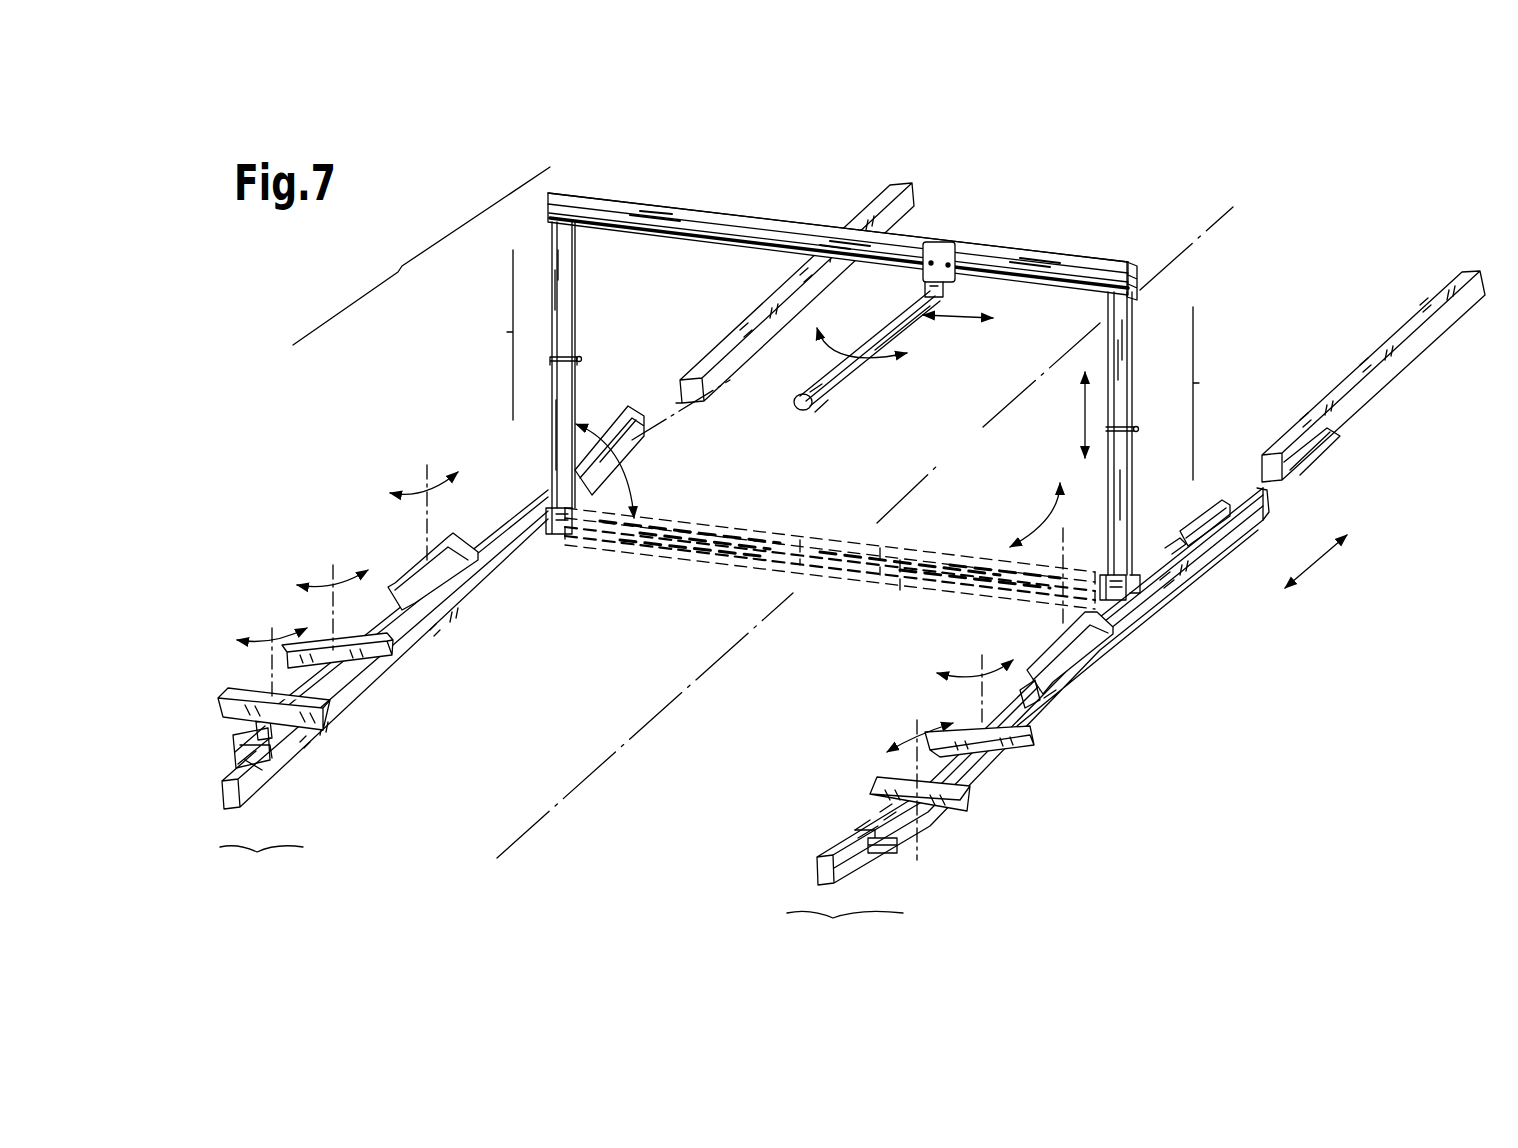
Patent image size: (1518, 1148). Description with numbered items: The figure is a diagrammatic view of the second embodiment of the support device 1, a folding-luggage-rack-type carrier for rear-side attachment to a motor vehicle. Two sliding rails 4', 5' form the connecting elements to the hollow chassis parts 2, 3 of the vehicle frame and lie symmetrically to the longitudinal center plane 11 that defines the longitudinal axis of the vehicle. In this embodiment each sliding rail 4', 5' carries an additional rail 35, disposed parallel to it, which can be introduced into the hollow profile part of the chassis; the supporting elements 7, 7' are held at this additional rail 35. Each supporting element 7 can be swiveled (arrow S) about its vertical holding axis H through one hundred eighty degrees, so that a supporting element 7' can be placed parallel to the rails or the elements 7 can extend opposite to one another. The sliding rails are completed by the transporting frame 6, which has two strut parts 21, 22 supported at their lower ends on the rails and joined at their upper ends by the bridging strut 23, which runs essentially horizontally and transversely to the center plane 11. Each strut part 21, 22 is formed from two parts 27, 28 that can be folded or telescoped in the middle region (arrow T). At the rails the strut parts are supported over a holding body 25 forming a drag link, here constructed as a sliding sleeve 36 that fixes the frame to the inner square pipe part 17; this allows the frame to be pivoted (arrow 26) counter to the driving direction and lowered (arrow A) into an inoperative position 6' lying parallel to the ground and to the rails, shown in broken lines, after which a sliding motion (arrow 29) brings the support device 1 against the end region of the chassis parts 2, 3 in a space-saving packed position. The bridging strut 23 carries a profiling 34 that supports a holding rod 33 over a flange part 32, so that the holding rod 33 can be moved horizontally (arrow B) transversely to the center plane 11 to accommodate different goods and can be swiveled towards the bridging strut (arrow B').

The support device 1 is at (421, 256).
The chassis part 2 is at (1437, 290).
The chassis part 3 is at (881, 183).
The transporting frame 6 is at (838, 189).
The transporting frame in inoperative position 6' is at (830, 590).
The supporting element 7 is at (649, 737).
The supporting element 7' is at (778, 613).
The longitudinal center plane 11 is at (522, 838).
The inner square pipe part 17 is at (280, 767).
The strut part 21 is at (524, 365).
The strut part 22 is at (1168, 433).
The bridging strut 23 is at (712, 225).
The holding body 25 is at (540, 527).
The pivoting motion arrow 26 is at (568, 357).
The strut part portion 27 is at (565, 296).
The strut part portion 28 is at (572, 400).
The sliding motion arrow 29 is at (1318, 563).
The flange part 32 is at (935, 255).
The holding rod 33 is at (818, 404).
The profiling 34 is at (1134, 268).
The additional rail 35 is at (252, 737).
The sliding sleeve 36 is at (545, 507).
The sliding rail 4' is at (845, 935).
The sliding rail 5' is at (261, 871).
The pivoting direction arrow A is at (633, 490).
The horizontal movement arrow B is at (972, 256).
The swiveling arrow B' is at (862, 393).
The sliding movement arrow T is at (1082, 427).
The swiveling arrow S is at (913, 745).
The vertical holding axis H is at (1063, 553).